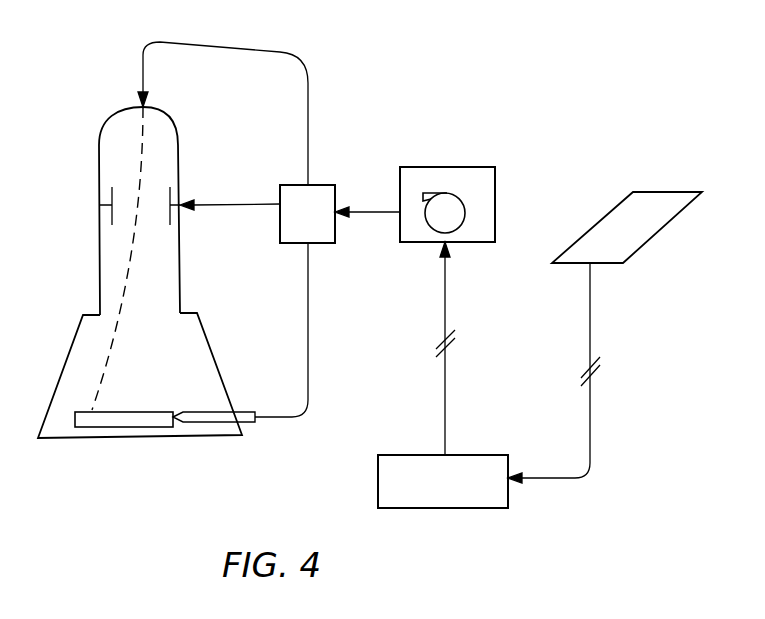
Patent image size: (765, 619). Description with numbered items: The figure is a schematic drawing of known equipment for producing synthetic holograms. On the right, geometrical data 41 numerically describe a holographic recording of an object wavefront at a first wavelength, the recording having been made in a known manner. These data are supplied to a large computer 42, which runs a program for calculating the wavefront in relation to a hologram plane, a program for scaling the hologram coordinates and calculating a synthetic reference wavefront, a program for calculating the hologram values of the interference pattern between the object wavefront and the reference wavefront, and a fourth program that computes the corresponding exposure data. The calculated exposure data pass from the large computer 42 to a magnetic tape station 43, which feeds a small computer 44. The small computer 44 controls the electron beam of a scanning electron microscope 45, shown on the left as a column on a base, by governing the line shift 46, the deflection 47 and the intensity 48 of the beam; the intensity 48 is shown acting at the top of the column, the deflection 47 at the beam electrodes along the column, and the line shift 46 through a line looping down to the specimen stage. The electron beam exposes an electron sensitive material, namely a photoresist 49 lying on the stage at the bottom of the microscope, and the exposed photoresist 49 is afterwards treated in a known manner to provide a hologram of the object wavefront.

The geometrical data 41 is at (637, 242).
The large computer 42 is at (455, 493).
The magnetic tape station 43 is at (487, 194).
The small computer 44 is at (319, 226).
The scanning electron microscope 45 is at (90, 190).
The line shift 46 is at (280, 330).
The deflection 47 is at (189, 199).
The intensity 48 is at (223, 101).
The photoresist 49 is at (131, 407).